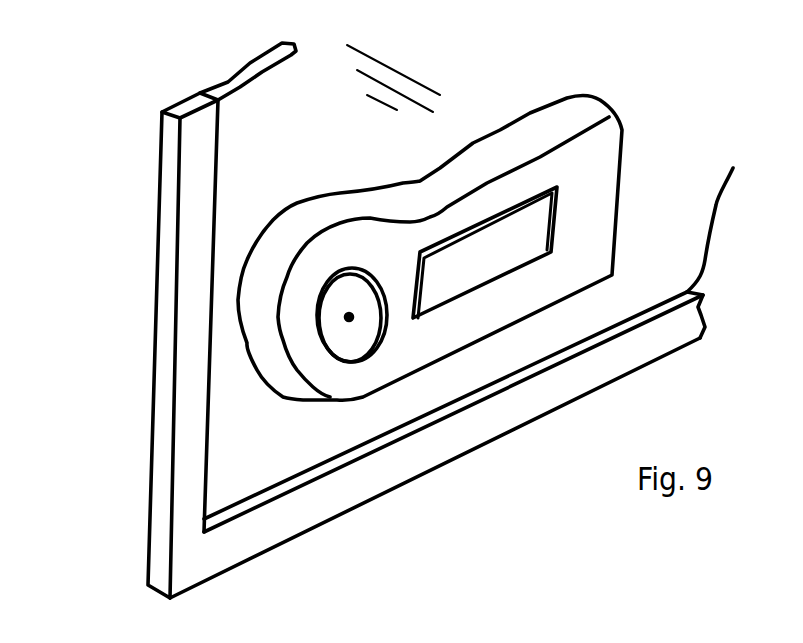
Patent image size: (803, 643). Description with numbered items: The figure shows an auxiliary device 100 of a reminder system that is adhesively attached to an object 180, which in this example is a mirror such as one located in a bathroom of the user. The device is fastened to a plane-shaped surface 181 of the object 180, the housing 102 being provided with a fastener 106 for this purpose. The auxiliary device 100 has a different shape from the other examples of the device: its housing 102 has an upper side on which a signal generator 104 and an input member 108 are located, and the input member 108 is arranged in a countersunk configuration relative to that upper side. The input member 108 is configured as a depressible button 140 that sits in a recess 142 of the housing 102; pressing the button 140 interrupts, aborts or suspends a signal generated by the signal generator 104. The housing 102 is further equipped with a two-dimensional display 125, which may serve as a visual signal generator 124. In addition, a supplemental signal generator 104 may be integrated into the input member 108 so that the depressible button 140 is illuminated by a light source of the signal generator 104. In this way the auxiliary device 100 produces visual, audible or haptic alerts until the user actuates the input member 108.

The auxiliary device 100 is at (500, 103).
The housing 102 is at (597, 113).
The signal generator 104 is at (360, 297).
The fastener 106 is at (518, 142).
The input member 108 is at (345, 297).
The visual signal generator 124 is at (478, 237).
The two-dimensional display 125 is at (533, 180).
The button 140 is at (340, 337).
The recess 142 is at (364, 323).
The object 180 is at (143, 300).
The plane-shaped surface 181 is at (232, 201).